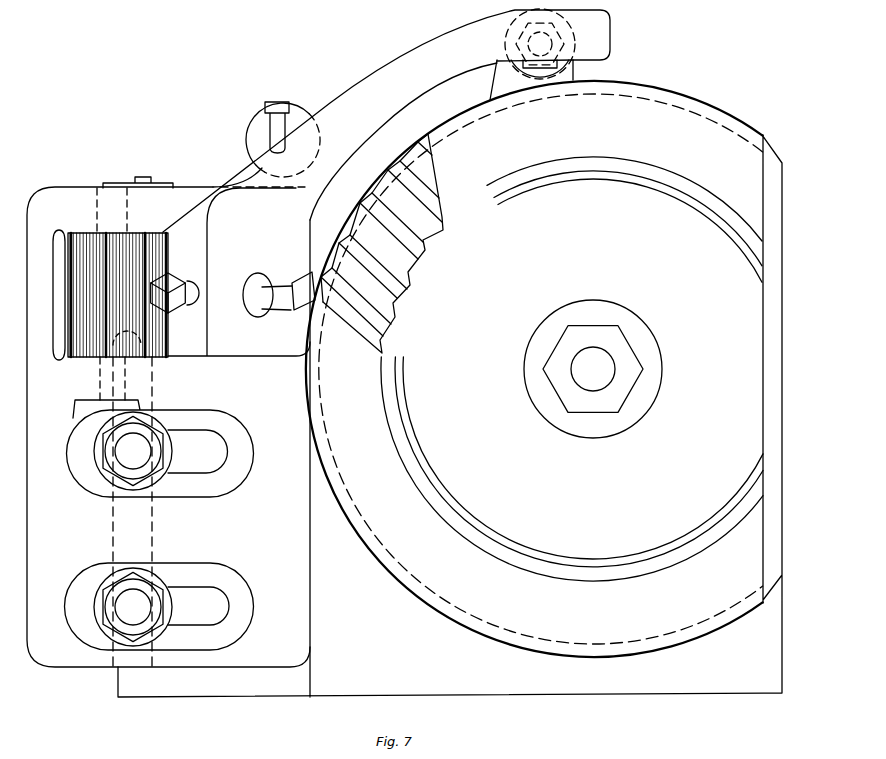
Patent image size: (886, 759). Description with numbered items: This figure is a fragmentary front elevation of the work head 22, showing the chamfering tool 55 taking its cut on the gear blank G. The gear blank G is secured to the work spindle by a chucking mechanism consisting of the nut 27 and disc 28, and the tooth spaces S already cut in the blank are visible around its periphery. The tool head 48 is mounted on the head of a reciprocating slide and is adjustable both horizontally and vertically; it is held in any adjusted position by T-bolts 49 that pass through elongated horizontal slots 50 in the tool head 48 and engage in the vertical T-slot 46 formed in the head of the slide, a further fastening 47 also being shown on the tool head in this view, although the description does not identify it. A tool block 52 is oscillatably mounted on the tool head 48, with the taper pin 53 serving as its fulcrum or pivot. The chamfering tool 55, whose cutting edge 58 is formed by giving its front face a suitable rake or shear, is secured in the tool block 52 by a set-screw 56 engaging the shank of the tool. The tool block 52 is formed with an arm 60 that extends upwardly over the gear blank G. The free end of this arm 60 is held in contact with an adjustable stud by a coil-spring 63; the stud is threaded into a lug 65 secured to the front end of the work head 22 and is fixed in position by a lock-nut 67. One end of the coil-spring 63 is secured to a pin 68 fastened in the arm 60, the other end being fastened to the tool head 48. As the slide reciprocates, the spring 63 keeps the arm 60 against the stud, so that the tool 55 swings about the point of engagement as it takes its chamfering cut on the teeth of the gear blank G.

The work head 22 is at (703, 683).
The nut 27 is at (620, 393).
The disc 28 is at (572, 369).
The gear blank G is at (513, 632).
The tooth spaces S is at (360, 227).
The vertical T-slot 46 is at (142, 543).
The bolt 47 is at (153, 451).
The tool head 48 is at (168, 427).
The T-bolts 49 is at (153, 607).
The elongated horizontal slots 50 is at (210, 463).
The tool block 52 is at (239, 272).
The taper pin 53 is at (117, 215).
The chamfering tool 55 is at (282, 303).
The set-screw 56 is at (171, 287).
The cutting edge 58 is at (297, 322).
The arm 60 is at (406, 58).
The coil-spring 63 is at (293, 112).
The lug 65 is at (497, 85).
The lock-nut 67 is at (575, 70).
The pin 68 is at (279, 101).